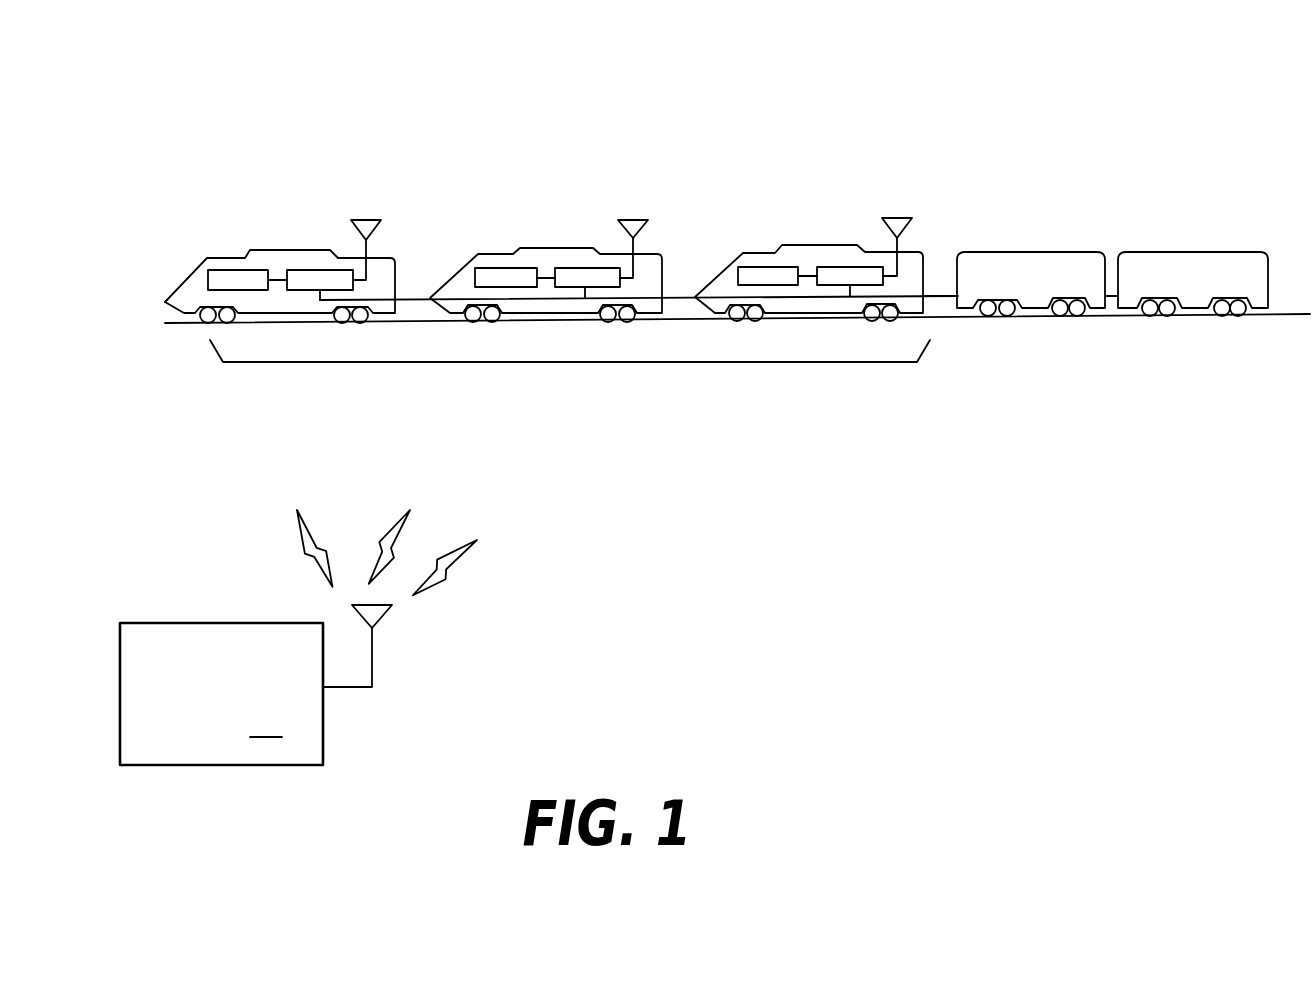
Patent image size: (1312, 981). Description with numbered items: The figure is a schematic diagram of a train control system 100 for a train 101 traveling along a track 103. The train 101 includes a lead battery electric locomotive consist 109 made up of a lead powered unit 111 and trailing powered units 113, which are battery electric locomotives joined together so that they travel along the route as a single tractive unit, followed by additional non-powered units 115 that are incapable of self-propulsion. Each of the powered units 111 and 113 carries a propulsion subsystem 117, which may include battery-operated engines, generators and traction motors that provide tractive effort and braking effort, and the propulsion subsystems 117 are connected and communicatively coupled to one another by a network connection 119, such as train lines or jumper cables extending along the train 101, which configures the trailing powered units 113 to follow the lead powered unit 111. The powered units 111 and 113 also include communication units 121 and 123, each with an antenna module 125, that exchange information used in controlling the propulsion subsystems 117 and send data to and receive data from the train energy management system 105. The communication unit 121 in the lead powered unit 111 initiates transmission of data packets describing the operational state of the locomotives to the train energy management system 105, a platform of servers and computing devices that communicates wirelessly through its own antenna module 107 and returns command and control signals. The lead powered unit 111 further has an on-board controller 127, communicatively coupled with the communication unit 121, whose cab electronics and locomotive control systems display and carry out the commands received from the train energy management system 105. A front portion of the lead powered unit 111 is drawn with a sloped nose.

The train control system 100 is at (637, 25).
The train 101 is at (993, 117).
The track 103 is at (963, 318).
The train energy management system 105 is at (221, 694).
The antenna module 107 is at (378, 612).
The lead battery electric locomotive consist 109 is at (563, 362).
The lead powered unit 111 is at (280, 251).
The trailing powered unit 113 is at (550, 248).
The non-powered unit 115 is at (1038, 252).
The propulsion subsystem 117 is at (233, 270).
The network connection 119 is at (422, 299).
The communication unit 121 is at (322, 270).
The communication unit 123 is at (590, 268).
The antenna module 125 is at (366, 220).
The on-board controller 127 is at (195, 275).